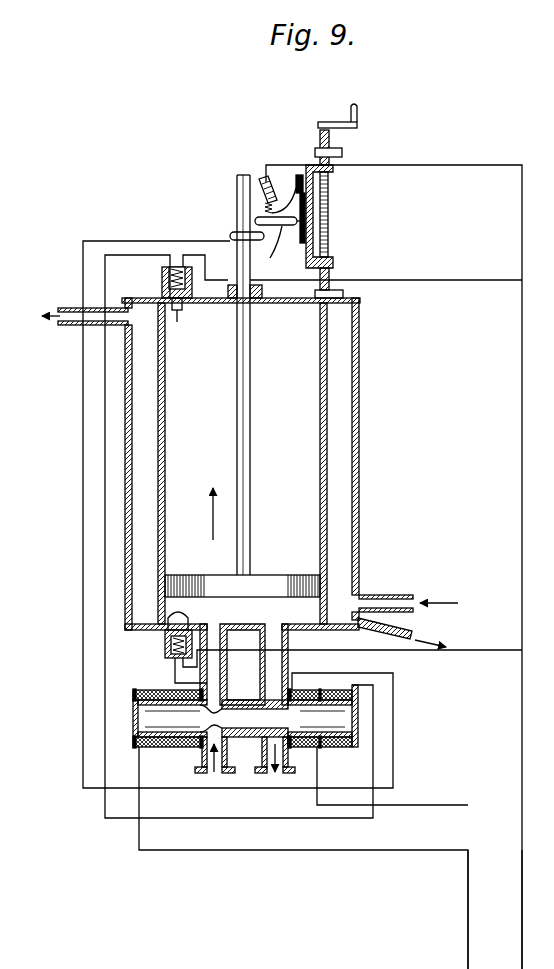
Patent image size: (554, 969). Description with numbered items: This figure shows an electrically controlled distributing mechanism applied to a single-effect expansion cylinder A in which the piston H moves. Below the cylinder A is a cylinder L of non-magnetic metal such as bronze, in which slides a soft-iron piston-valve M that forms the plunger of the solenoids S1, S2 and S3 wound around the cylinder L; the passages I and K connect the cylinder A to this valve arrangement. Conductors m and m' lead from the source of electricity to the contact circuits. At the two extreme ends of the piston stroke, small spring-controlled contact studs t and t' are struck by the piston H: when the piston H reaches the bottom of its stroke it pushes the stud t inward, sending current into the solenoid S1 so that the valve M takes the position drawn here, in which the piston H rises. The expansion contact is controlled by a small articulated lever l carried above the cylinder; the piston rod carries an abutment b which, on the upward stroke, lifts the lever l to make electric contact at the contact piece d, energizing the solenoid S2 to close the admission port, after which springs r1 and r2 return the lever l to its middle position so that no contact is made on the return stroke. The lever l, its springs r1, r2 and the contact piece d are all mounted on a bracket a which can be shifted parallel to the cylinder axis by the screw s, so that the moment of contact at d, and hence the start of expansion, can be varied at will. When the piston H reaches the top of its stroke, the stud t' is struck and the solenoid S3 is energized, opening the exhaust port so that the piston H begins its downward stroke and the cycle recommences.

The expansion cylinder A is at (330, 603).
The piston H is at (300, 575).
The spring-controlled contact stud t' is at (177, 305).
The spring-controlled contact stud t is at (188, 628).
The abutment b is at (232, 233).
The contact piece d is at (262, 208).
The spring r1 is at (272, 212).
The spring r2 is at (289, 226).
The articulated lever l is at (268, 250).
The screw s is at (329, 223).
The bracket a is at (329, 247).
The inlet channel I is at (210, 773).
The outlet channel K is at (280, 782).
The cylinder L is at (340, 724).
The piston-valve M is at (250, 727).
The solenoid S1 is at (175, 740).
The solenoid S2 is at (310, 744).
The solenoid S3 is at (340, 748).
The conductor m is at (448, 909).
The conductor m' is at (504, 909).